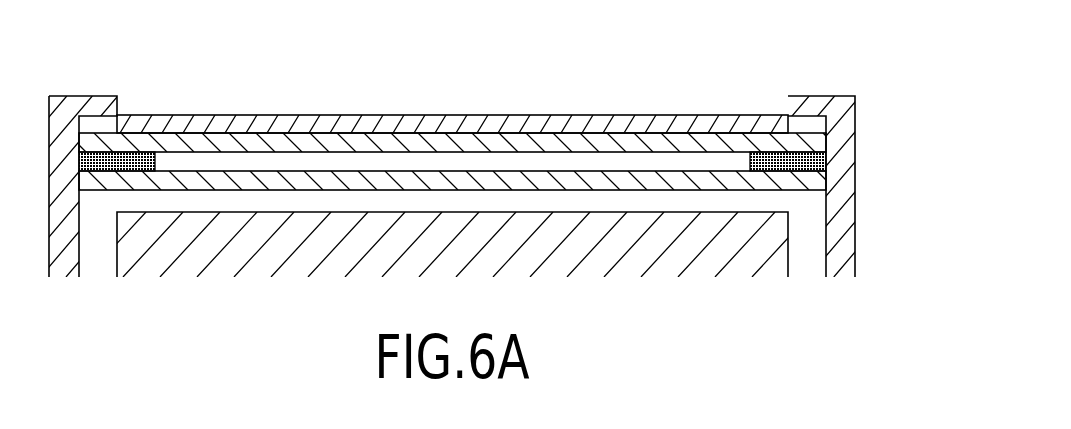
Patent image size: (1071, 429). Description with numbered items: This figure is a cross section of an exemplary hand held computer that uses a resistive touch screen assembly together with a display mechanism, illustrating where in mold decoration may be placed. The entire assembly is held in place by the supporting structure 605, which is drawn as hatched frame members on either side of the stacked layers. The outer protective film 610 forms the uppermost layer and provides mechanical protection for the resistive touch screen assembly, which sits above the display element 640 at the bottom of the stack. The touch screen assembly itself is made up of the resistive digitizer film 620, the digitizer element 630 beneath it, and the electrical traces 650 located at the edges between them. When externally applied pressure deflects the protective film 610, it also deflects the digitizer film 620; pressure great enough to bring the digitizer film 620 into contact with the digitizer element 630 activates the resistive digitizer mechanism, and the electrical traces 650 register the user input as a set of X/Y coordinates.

The supporting structure 605 is at (82, 99).
The outer protective film 610 is at (190, 123).
The resistive digitizer film 620 is at (812, 140).
The electrical traces 650 is at (815, 162).
The digitizer element 630 is at (808, 180).
The display element 640 is at (772, 240).